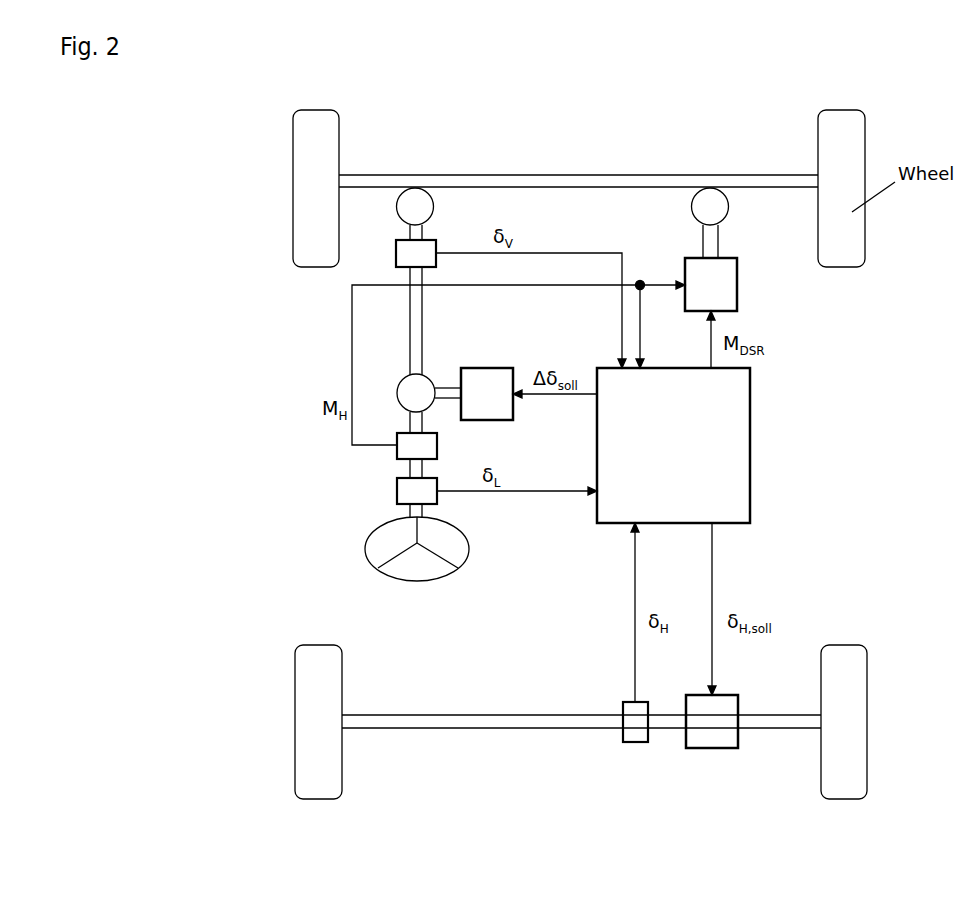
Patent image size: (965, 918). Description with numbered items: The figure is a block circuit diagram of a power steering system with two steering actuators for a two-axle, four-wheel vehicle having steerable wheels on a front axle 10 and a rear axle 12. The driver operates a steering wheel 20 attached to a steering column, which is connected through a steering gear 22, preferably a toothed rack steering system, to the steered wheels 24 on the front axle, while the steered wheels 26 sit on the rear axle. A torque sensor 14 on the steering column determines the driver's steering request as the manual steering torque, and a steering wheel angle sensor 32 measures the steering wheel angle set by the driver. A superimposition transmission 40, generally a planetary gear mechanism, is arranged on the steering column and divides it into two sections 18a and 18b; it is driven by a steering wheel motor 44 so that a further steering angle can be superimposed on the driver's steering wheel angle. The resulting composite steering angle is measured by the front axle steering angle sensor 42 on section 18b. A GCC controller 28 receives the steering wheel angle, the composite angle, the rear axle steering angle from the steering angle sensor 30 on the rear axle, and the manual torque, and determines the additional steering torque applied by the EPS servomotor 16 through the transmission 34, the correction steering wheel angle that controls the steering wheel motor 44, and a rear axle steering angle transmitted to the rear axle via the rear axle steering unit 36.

The front axle 10 is at (588, 173).
The rear axle 12 is at (416, 730).
The torque sensor 14 is at (402, 452).
The EPS servomotor 16 is at (730, 292).
The steering column section 18a is at (426, 420).
The steering column section 18b is at (427, 317).
The steering wheel 20 is at (363, 557).
The steering gear 22 is at (415, 195).
The steered wheels 24 is at (312, 120).
The steered wheels 26 is at (310, 792).
The GCC controller 28 is at (743, 470).
The steering angle sensor 30 is at (634, 714).
The steering wheel angle sensor 32 is at (402, 490).
The transmission 34 is at (728, 163).
The rear axle steering unit 36 is at (719, 740).
The superimposition transmission 40 is at (402, 388).
The steering angle sensor 42 is at (398, 254).
The steering wheel motor 44 is at (502, 350).